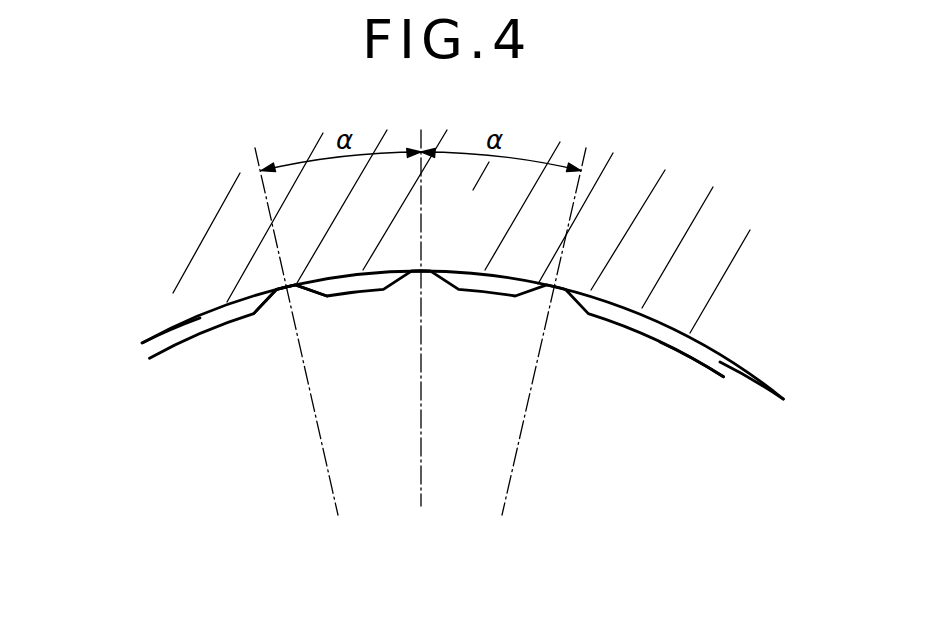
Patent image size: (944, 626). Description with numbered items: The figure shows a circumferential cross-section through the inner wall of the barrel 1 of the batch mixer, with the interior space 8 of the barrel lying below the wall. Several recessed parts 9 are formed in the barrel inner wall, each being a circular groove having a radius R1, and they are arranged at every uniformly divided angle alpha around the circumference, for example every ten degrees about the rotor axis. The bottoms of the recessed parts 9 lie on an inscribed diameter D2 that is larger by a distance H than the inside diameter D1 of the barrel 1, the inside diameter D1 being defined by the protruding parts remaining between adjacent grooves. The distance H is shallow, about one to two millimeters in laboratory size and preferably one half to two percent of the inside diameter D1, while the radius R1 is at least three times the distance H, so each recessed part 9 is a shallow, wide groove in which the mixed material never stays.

The barrel 1 is at (705, 253).
The inner space / bore region 8 is at (482, 453).
The recessed part 9 is at (280, 292).
The radius of the recessed part R1 is at (433, 273).
The distance H is at (155, 289).
The inside diameter D1 is at (703, 364).
The inscribed diameter D2 is at (765, 385).